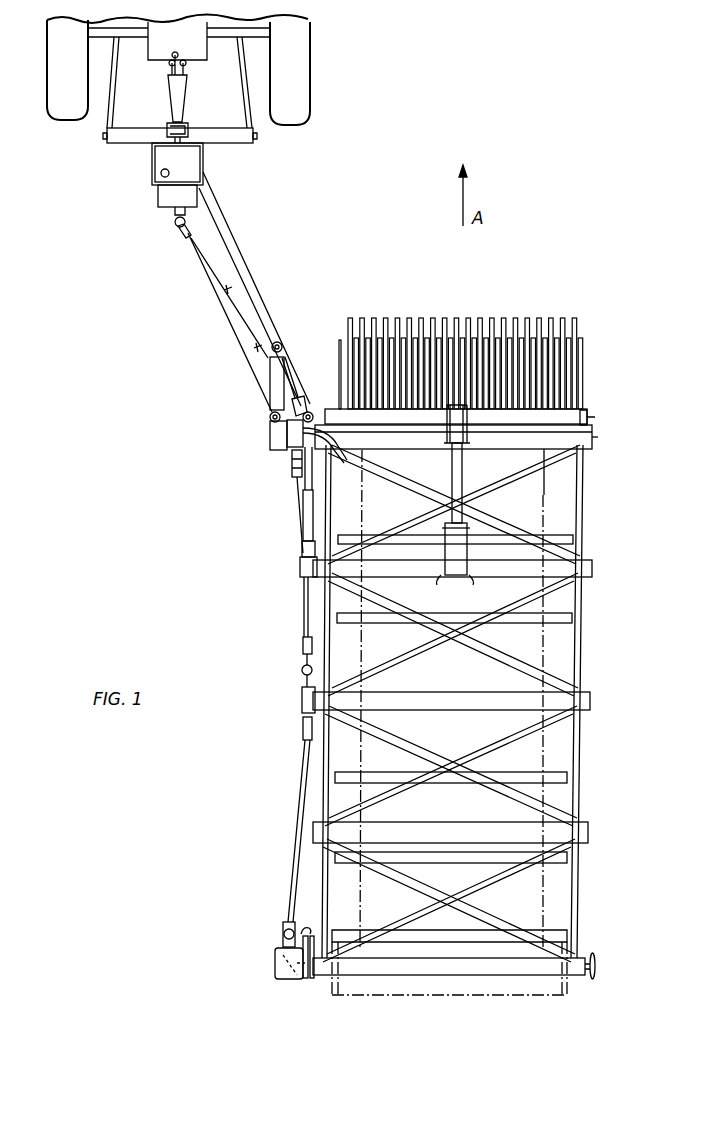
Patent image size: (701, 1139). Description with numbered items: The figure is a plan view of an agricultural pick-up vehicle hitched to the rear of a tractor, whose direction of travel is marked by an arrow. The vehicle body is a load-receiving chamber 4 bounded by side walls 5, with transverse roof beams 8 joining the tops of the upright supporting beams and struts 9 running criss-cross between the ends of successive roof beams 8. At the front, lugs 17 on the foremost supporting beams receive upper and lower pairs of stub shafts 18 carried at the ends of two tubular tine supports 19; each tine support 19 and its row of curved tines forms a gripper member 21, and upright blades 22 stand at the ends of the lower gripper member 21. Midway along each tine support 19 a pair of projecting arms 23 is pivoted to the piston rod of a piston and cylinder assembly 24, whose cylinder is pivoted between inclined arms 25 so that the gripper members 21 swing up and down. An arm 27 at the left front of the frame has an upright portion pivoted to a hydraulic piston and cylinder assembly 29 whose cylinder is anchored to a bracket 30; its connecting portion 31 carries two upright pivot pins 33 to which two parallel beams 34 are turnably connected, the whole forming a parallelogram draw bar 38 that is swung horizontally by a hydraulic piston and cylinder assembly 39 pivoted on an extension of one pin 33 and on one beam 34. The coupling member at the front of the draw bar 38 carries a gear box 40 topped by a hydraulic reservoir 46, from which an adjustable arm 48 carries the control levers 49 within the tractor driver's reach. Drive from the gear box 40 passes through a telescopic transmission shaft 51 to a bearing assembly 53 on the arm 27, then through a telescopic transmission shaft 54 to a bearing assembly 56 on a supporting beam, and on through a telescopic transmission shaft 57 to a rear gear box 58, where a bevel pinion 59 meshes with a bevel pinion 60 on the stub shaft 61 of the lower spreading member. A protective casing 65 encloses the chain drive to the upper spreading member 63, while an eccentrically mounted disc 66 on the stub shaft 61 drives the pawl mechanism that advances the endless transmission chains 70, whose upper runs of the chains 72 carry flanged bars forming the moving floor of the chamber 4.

The load-receiving chamber 4 is at (452, 685).
The side walls 5 is at (331, 648).
The transverse roof beams 8 is at (593, 573).
The struts 9 is at (510, 781).
The lugs 17 is at (312, 414).
The stub shafts 18 is at (598, 430).
The tine supports 19 is at (580, 401).
The gripper member 21 is at (474, 313).
The upright blades 22 is at (339, 361).
The projecting arms 23 is at (446, 457).
The piston and cylinder assembly 24 is at (463, 483).
The inclined arms 25 is at (468, 584).
The arm 27 is at (343, 460).
The hydraulic piston and cylinder assembly 29 is at (303, 512).
The bracket 30 is at (302, 556).
The connecting portion 31 is at (268, 443).
The upright pivot pins 33 is at (270, 417).
The beams 34 is at (263, 308).
The draw bar 38 is at (245, 248).
The hydraulic piston and cylinder assembly 39 is at (287, 357).
The gear box 40 is at (158, 199).
The reservoir 46 is at (200, 155).
The arm 48 is at (188, 99).
The control levers 49 is at (172, 68).
The telescopic transmission shaft 51 is at (196, 252).
The bearing assembly 53 is at (292, 466).
The telescopic transmission shaft 54 is at (304, 605).
The bearing assembly 56 is at (301, 702).
The telescopic transmission shaft 57 is at (290, 869).
The gear box 58 is at (275, 971).
The bevel pinion 59 is at (275, 956).
The bevel pinion 60 is at (290, 984).
The stub shaft 61 is at (310, 984).
The spreading member 63 is at (469, 998).
The protective casing 65 is at (600, 951).
The eccentrically mounted disc 66 is at (308, 918).
The endless transmission chains 70 is at (360, 763).
The chains 72 is at (455, 595).